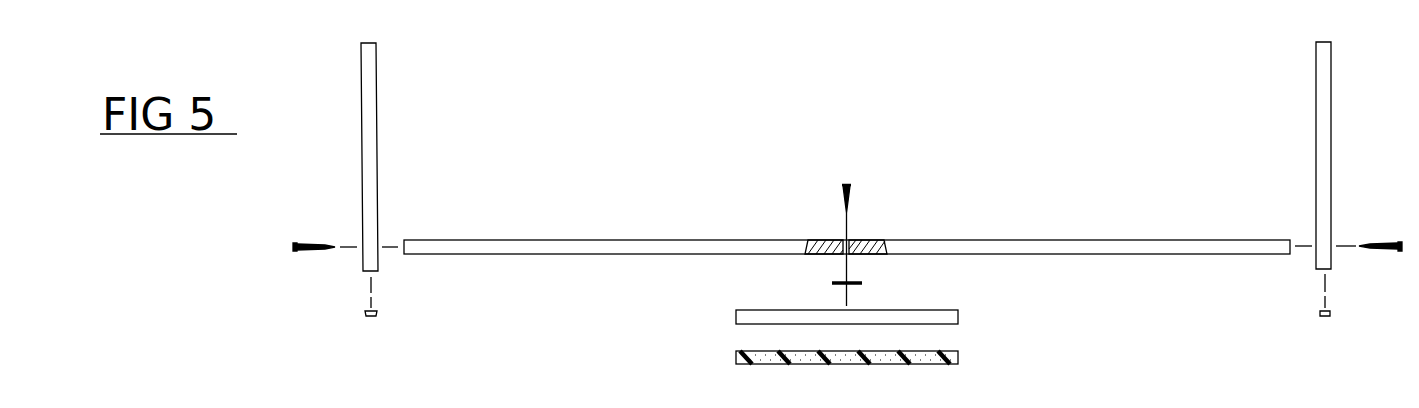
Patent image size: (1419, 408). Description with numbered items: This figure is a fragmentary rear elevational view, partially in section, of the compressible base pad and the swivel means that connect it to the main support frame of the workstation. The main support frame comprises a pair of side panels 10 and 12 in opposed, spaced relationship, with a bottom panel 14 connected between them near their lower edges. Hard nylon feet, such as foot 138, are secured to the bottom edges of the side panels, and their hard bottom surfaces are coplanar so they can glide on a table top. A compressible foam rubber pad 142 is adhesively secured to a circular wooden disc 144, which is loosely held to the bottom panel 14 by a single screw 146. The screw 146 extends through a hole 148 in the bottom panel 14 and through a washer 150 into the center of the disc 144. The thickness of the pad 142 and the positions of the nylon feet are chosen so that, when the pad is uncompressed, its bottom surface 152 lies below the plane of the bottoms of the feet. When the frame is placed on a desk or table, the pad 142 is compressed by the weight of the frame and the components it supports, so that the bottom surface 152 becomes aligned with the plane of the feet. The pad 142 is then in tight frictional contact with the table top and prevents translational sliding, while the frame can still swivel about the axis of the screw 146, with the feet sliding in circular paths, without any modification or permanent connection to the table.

The side panel 10 is at (486, 150).
The side panel 12 is at (1235, 152).
The bottom panel 14 is at (847, 215).
The foot 138 is at (1258, 331).
The compressible foam rubber pad 142 is at (919, 341).
The circular wooden disc 144 is at (775, 328).
The screw 146 is at (777, 222).
The hole 148 is at (900, 224).
The washer 150 is at (862, 283).
The bottom surface 152 is at (833, 379).